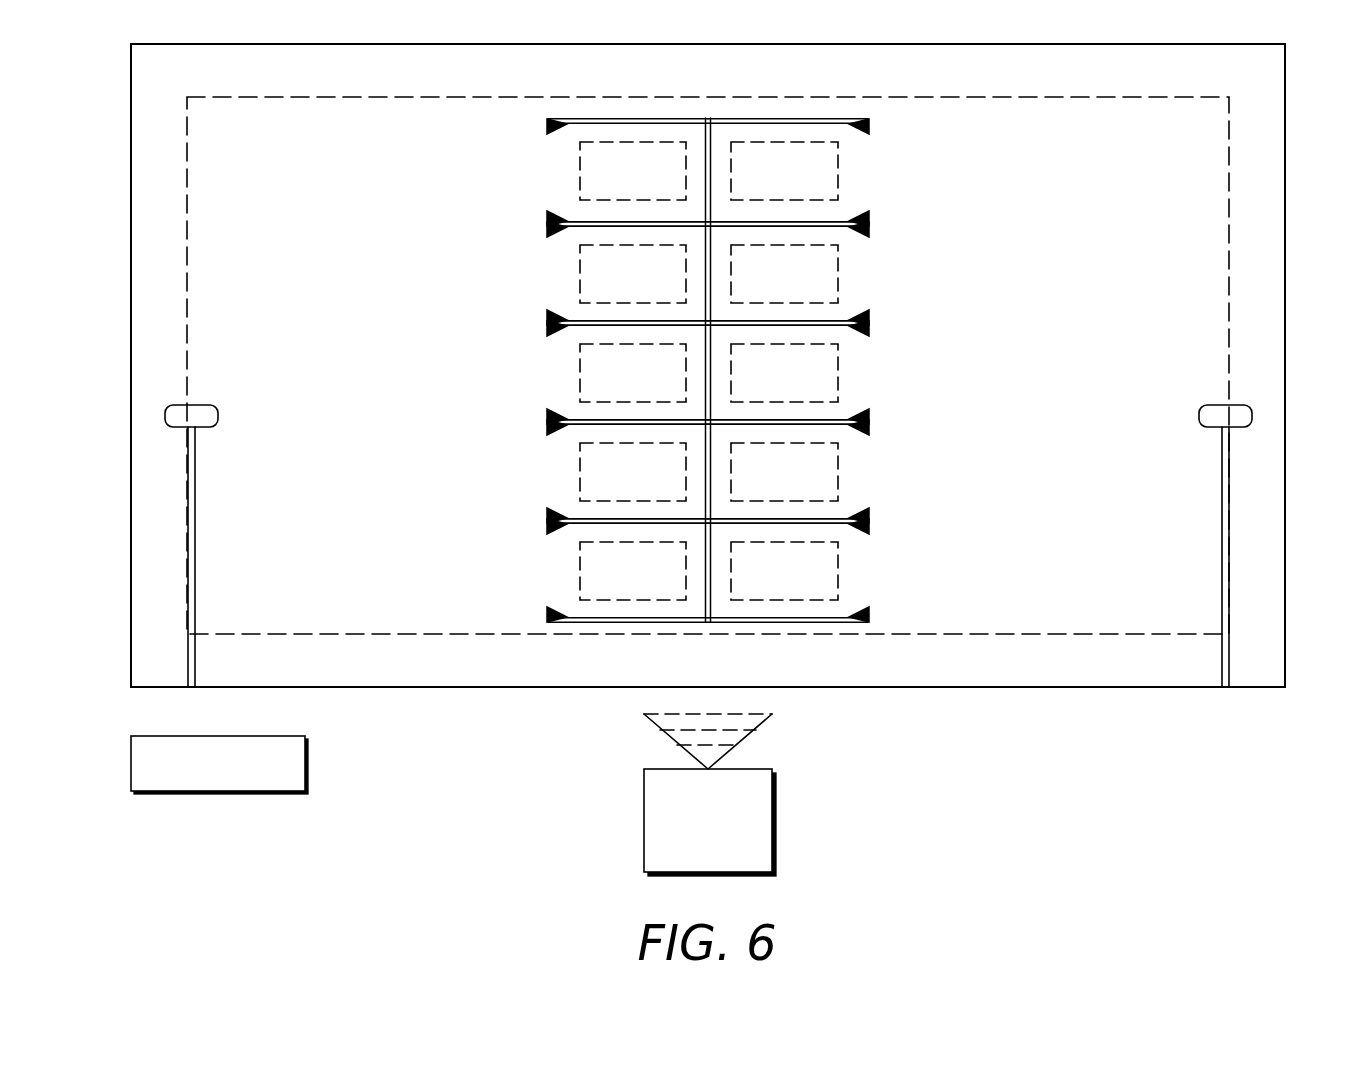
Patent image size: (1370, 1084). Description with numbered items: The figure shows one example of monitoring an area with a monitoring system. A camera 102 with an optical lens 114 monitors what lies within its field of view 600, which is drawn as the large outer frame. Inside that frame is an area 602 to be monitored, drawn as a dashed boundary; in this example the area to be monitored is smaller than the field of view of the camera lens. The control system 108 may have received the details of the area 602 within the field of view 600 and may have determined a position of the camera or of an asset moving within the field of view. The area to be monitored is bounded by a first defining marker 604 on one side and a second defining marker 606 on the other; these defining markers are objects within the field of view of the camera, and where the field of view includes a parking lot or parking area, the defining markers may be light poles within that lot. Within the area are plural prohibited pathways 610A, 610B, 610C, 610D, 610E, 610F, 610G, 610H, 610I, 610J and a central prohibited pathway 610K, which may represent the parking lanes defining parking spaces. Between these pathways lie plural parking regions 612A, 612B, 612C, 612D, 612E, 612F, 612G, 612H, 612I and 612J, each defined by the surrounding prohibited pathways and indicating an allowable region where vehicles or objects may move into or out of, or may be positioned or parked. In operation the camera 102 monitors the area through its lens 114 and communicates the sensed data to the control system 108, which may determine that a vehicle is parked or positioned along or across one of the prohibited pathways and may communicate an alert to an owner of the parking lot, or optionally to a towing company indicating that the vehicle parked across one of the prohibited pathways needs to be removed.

The field of view 600 is at (1288, 173).
The area 602 is at (1232, 291).
The first defining marker 604 is at (168, 499).
The second defining marker 606 is at (1230, 518).
The prohibited pathway 610A is at (548, 127).
The prohibited pathway 610B is at (872, 127).
The prohibited pathway 610C is at (548, 230).
The prohibited pathway 610D is at (872, 230).
The prohibited pathway 610E is at (548, 329).
The prohibited pathway 610F is at (872, 329).
The prohibited pathway 610G is at (548, 428).
The prohibited pathway 610H is at (872, 428).
The prohibited pathway 610I is at (548, 527).
The prohibited pathway 610J is at (872, 527).
The prohibited pathway 610K is at (709, 143).
The parking region 612A is at (613, 186).
The parking region 612B is at (764, 186).
The parking region 612C is at (613, 289).
The parking region 612D is at (764, 289).
The parking region 612E is at (613, 388).
The parking region 612F is at (764, 388).
The parking region 612G is at (613, 487).
The parking region 612H is at (764, 487).
The parking region 612I is at (613, 586).
The parking region 612J is at (764, 586).
The control system 108 is at (300, 735).
The camera 102 is at (792, 823).
The optical lens 114 is at (641, 737).